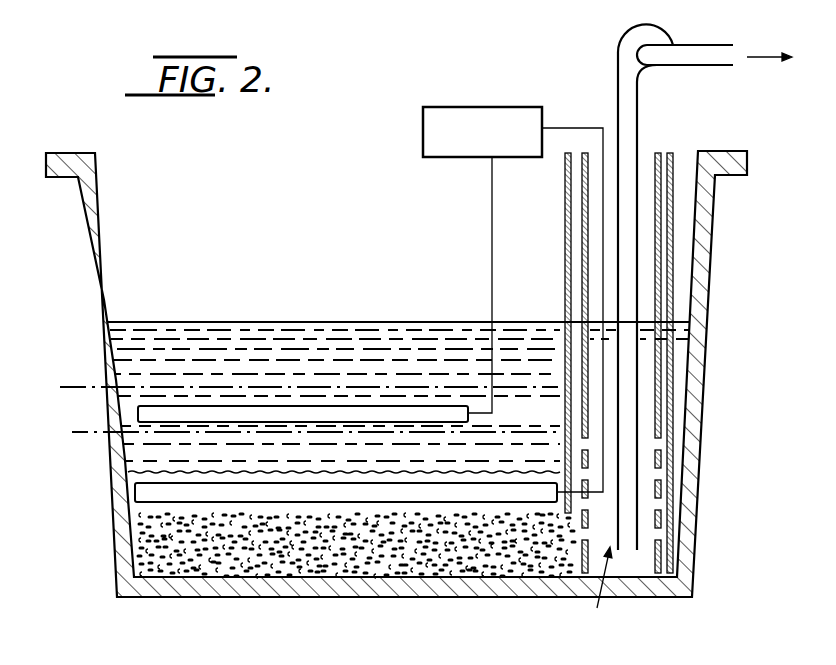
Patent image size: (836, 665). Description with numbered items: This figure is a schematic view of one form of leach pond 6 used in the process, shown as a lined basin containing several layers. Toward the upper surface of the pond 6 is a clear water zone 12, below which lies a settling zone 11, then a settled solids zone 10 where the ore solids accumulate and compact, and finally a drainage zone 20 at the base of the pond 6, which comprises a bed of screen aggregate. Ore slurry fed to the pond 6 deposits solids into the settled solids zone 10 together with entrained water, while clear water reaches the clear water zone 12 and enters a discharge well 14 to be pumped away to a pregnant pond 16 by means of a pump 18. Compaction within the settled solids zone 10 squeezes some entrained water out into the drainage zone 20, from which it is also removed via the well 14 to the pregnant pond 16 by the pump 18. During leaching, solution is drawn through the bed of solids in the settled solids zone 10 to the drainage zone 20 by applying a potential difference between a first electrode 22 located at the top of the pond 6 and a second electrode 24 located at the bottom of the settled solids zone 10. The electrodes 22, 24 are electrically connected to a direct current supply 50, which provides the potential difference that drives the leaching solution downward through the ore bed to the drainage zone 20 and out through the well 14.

The leaching pond 6 is at (108, 602).
The settled solids zone 10 is at (339, 452).
The settling zone 11 is at (292, 406).
The clear water zone 12 is at (248, 348).
The discharge well 14 is at (599, 595).
The pregnant pond 16 is at (768, 42).
The pump 18 is at (618, 52).
The drainage zone 20 is at (330, 538).
The first electrode 22 is at (410, 414).
The second electrode 24 is at (400, 493).
The direct current supply 50 is at (468, 124).